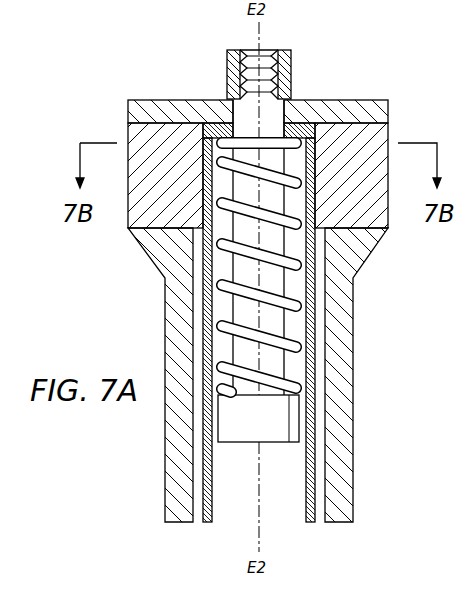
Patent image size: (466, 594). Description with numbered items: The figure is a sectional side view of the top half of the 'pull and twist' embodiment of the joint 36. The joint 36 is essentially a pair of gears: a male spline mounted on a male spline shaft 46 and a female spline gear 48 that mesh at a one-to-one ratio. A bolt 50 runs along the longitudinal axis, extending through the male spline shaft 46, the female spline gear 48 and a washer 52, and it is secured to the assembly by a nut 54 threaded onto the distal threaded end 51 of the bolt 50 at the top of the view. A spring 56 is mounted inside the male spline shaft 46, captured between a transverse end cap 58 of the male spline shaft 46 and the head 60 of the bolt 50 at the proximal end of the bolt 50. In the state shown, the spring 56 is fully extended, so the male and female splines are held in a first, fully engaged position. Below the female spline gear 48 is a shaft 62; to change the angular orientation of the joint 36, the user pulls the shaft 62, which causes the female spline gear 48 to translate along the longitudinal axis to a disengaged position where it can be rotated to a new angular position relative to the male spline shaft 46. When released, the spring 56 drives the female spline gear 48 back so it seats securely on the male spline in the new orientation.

The joint 36 is at (232, 300).
The male spline shaft 46 is at (311, 150).
The female spline gear 48 is at (130, 207).
The bolt 50 is at (243, 112).
The distal threaded end 51 is at (255, 66).
The washer 52 is at (358, 110).
The nut 54 is at (290, 75).
The spring 56 is at (228, 331).
The transverse end cap 58 is at (201, 122).
The head 60 is at (228, 420).
The shaft 62 is at (163, 253).